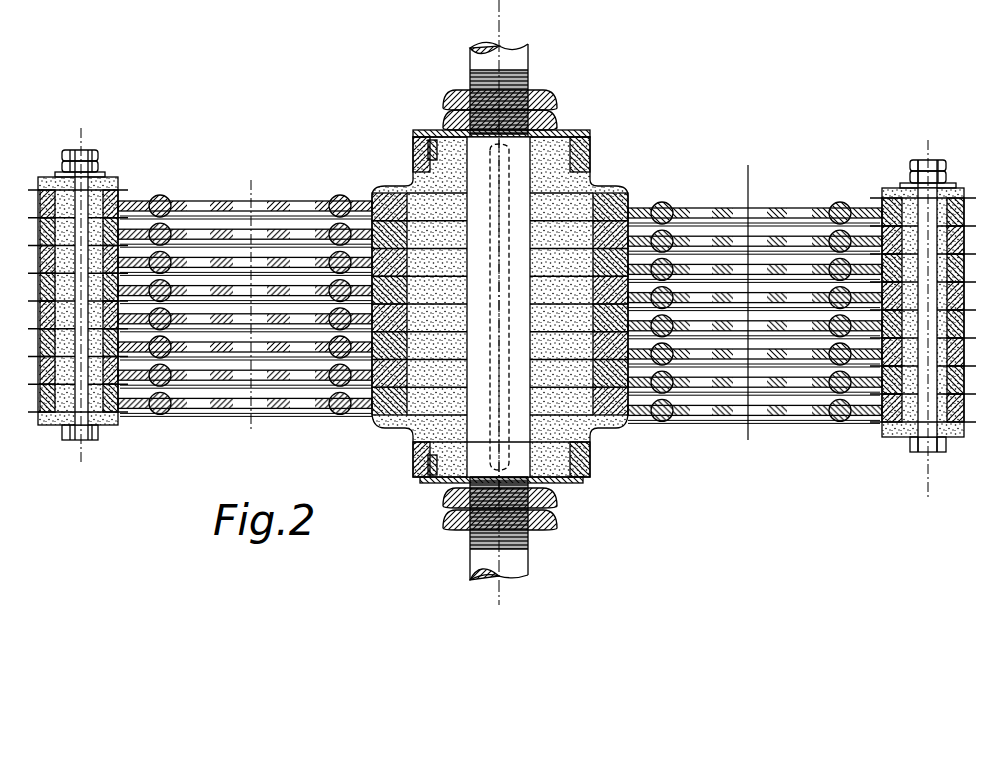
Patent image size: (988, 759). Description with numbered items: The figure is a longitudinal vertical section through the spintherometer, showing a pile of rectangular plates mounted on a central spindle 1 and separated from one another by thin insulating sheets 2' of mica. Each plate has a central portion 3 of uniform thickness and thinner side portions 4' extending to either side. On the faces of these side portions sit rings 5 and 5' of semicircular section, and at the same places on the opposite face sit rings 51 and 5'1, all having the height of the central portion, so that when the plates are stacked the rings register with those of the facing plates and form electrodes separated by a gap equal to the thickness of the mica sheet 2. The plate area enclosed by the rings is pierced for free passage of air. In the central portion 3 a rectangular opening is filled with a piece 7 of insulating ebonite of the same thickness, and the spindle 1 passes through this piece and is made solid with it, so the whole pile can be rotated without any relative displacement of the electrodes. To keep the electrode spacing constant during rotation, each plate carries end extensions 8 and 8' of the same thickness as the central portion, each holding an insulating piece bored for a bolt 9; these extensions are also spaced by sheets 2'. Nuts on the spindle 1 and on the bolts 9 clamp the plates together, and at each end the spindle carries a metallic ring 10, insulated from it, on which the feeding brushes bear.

The spindle 1 is at (480, 175).
The sheet of mica 2 is at (479, 305).
The insulating sheets 2' is at (502, 296).
The central portion 3 is at (602, 205).
The side portions 4' is at (245, 297).
The ring 5 is at (170, 292).
The ring 51 is at (163, 208).
The ring 5' is at (755, 299).
The ring 5'1 is at (831, 288).
The piece of insulating material 7 is at (417, 208).
The extension 8 is at (60, 301).
The extension 8' is at (930, 286).
The bolt 9 is at (81, 400).
The metallic ring 10 is at (577, 155).